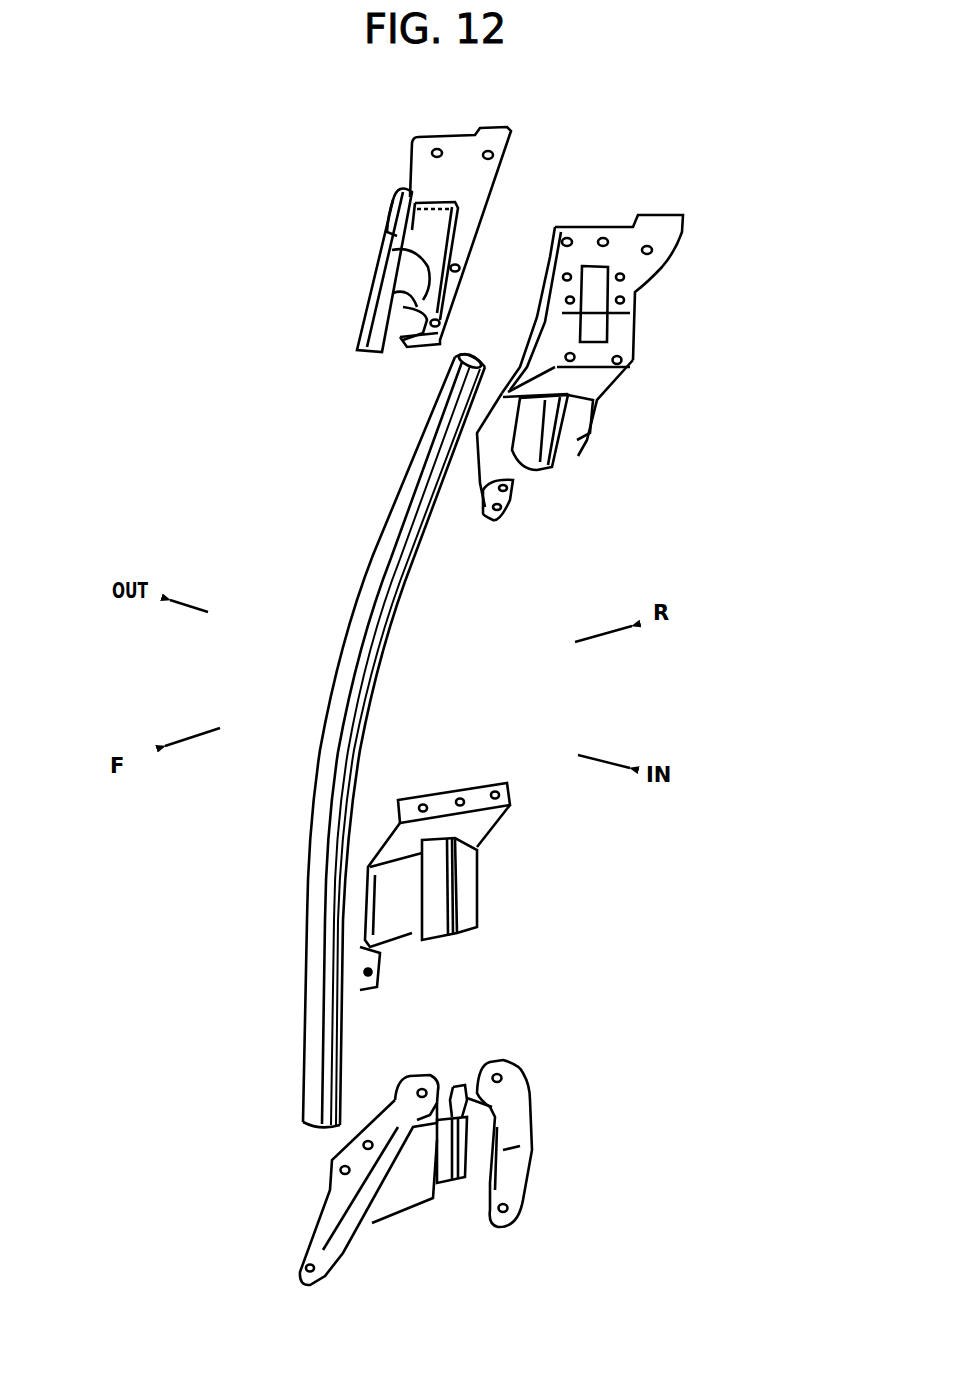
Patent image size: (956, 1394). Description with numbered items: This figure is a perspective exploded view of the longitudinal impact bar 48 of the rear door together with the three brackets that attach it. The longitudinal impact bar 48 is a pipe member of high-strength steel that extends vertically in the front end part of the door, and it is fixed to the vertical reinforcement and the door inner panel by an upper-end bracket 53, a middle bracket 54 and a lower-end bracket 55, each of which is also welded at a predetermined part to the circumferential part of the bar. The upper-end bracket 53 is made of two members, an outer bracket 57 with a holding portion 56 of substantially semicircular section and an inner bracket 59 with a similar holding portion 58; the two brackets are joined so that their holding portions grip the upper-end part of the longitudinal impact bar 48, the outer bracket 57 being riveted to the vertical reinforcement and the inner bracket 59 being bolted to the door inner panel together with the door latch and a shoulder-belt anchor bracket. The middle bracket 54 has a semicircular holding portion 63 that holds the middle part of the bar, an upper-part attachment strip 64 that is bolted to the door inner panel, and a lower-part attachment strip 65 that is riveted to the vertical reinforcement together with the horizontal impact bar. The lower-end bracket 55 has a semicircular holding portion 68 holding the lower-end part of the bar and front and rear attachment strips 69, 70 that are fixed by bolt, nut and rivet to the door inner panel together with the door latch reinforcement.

The longitudinal impact bar 48 is at (368, 683).
The upper-end bracket 53 is at (670, 316).
The middle bracket 54 is at (462, 866).
The lower-end bracket 55 is at (427, 1170).
The holding portion 56 is at (397, 306).
The outer bracket 57 is at (385, 228).
The holding portion 58 is at (565, 434).
The inner bracket 59 is at (622, 375).
The holding portion 63 is at (463, 913).
The upper-part attachment strip 64 is at (443, 807).
The lower-part attachment strip 65 is at (383, 970).
The holding portion 68 is at (447, 1177).
The front attachment strip 69 is at (330, 1223).
The rear attachment strip 70 is at (515, 1168).